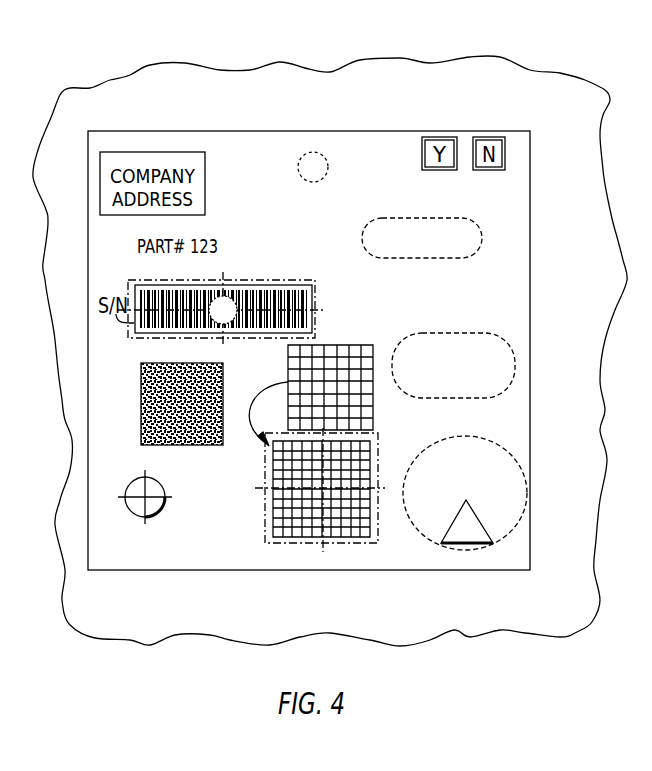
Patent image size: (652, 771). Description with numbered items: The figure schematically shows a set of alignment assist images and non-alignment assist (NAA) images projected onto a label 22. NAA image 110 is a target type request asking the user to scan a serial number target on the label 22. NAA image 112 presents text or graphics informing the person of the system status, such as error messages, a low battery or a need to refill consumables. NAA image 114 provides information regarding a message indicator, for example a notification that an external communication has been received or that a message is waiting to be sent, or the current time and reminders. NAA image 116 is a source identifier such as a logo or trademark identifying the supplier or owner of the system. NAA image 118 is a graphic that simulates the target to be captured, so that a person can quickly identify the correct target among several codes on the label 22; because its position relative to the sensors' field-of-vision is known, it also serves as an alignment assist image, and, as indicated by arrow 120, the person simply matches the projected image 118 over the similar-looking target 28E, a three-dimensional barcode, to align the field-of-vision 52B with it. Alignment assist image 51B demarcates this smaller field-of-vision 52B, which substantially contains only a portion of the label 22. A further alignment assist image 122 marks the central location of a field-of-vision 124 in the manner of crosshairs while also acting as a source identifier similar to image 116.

The label 22 is at (405, 140).
The NAA image 110 is at (446, 217).
The NAA image 112 is at (482, 333).
The NAA image 114 is at (472, 552).
The NAA image 116 is at (329, 172).
The NAA image 118 is at (331, 345).
The arrow 120 is at (246, 432).
The alignment assist image 122 is at (228, 297).
The field-of-vision 124 is at (221, 282).
The alignment assist image 51B is at (295, 500).
The field-of-vision 52B is at (266, 520).
The target 28E is at (313, 500).